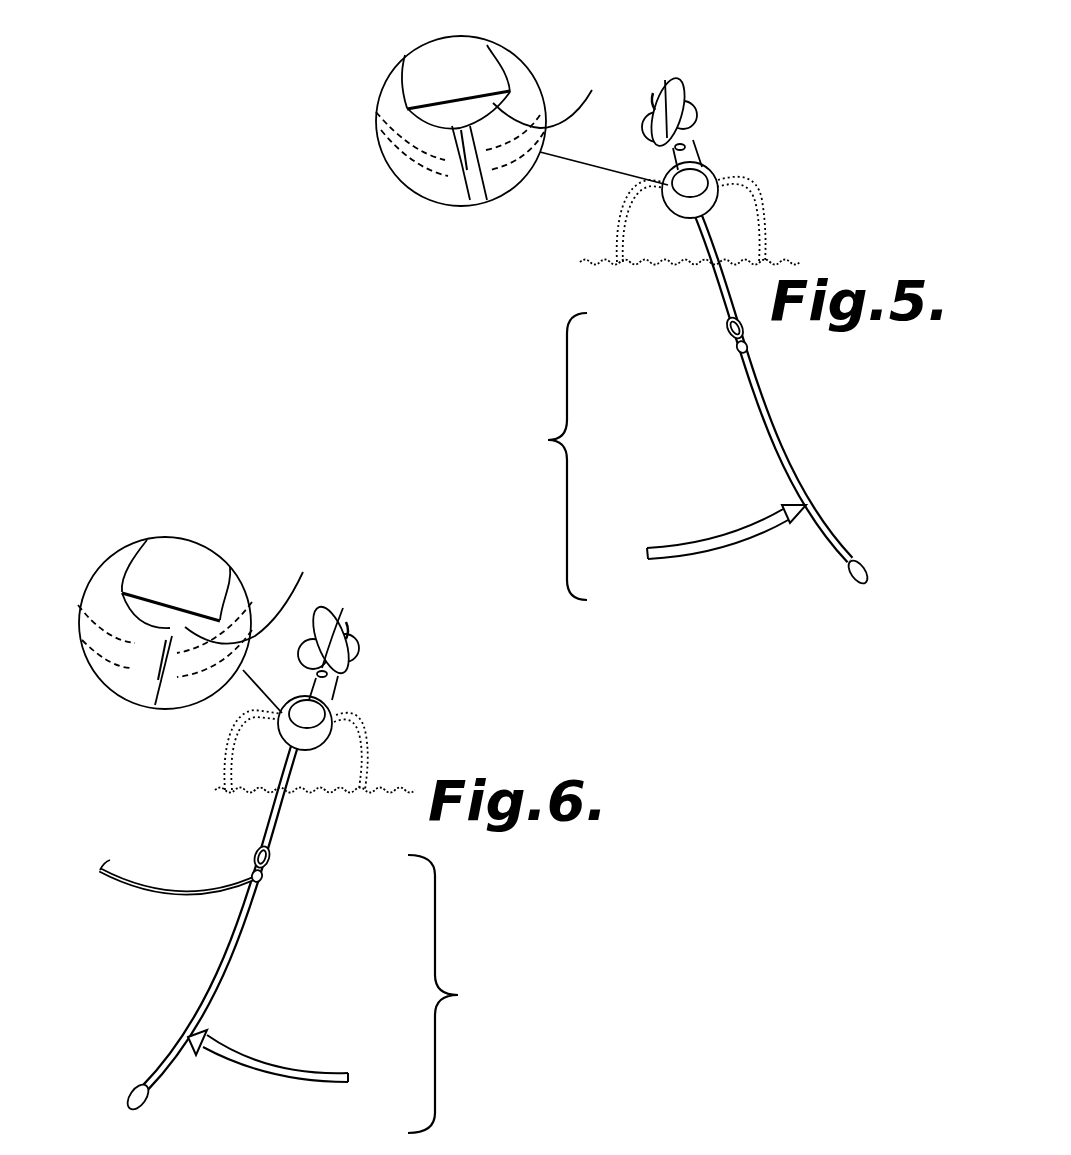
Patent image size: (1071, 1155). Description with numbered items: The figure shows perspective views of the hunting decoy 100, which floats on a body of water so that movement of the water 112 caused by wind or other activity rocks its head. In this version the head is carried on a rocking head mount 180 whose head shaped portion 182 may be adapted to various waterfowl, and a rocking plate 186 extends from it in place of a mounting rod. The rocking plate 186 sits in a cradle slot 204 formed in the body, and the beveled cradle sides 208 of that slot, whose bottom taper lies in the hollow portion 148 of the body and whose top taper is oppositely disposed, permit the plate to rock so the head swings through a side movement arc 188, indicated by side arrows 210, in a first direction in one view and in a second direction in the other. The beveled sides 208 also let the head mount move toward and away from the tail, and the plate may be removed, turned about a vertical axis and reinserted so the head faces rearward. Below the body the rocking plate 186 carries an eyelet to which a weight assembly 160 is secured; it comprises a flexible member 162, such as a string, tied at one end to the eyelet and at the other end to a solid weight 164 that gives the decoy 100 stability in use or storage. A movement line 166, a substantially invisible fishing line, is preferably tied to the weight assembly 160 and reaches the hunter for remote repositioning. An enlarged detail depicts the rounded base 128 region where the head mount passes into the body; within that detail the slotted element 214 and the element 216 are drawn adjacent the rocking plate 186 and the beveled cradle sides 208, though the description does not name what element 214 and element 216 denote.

In FIG. 5, the hunting decoy 100 is at (780, 148).
In FIG. 6, the hunting decoy 100 is at (388, 626).
In FIG. 6, the water 112 is at (230, 793).
In FIG. 5, the rounded base 128 is at (570, 122).
In FIG. 6, the rounded base 128 is at (285, 606).
In FIG. 5, the hollow portion 148 is at (750, 222).
In FIG. 6, the hollow portion 148 is at (260, 760).
In FIG. 5, the weight assembly 160 is at (540, 456).
In FIG. 6, the weight assembly 160 is at (463, 994).
In FIG. 5, the flexible member 162 is at (784, 440).
In FIG. 6, the flexible member 162 is at (228, 966).
In FIG. 5, the solid weight 164 is at (866, 565).
In FIG. 6, the solid weight 164 is at (138, 1090).
In FIG. 6, the movement line 166 is at (168, 893).
In FIG. 5, the rocking head mount 180 is at (709, 164).
In FIG. 6, the rocking head mount 180 is at (343, 699).
In FIG. 5, the head shaped portion 182 is at (656, 78).
In FIG. 6, the head shaped portion 182 is at (350, 606).
In FIG. 5, the rocking plate 186 is at (716, 285).
In FIG. 6, the rocking plate 186 is at (290, 808).
In FIG. 5, the side movement arc 188 is at (830, 500).
In FIG. 6, the side movement arc 188 is at (178, 1001).
In FIG. 5, the cradle slot 204 is at (672, 232).
In FIG. 6, the cradle slot 204 is at (325, 758).
In FIG. 5, the beveled cradle sides 208 is at (446, 167).
In FIG. 6, the beveled cradle sides 208 is at (190, 625).
In FIG. 5, the side arrows 210 is at (704, 542).
In FIG. 6, the side arrows 210 is at (272, 1068).
In FIG. 5, the tube segment 214 is at (470, 200).
In FIG. 6, the tube segment 214 is at (165, 712).
In FIG. 5, the hub cap 216 is at (462, 124).
In FIG. 6, the hub cap 216 is at (152, 760).